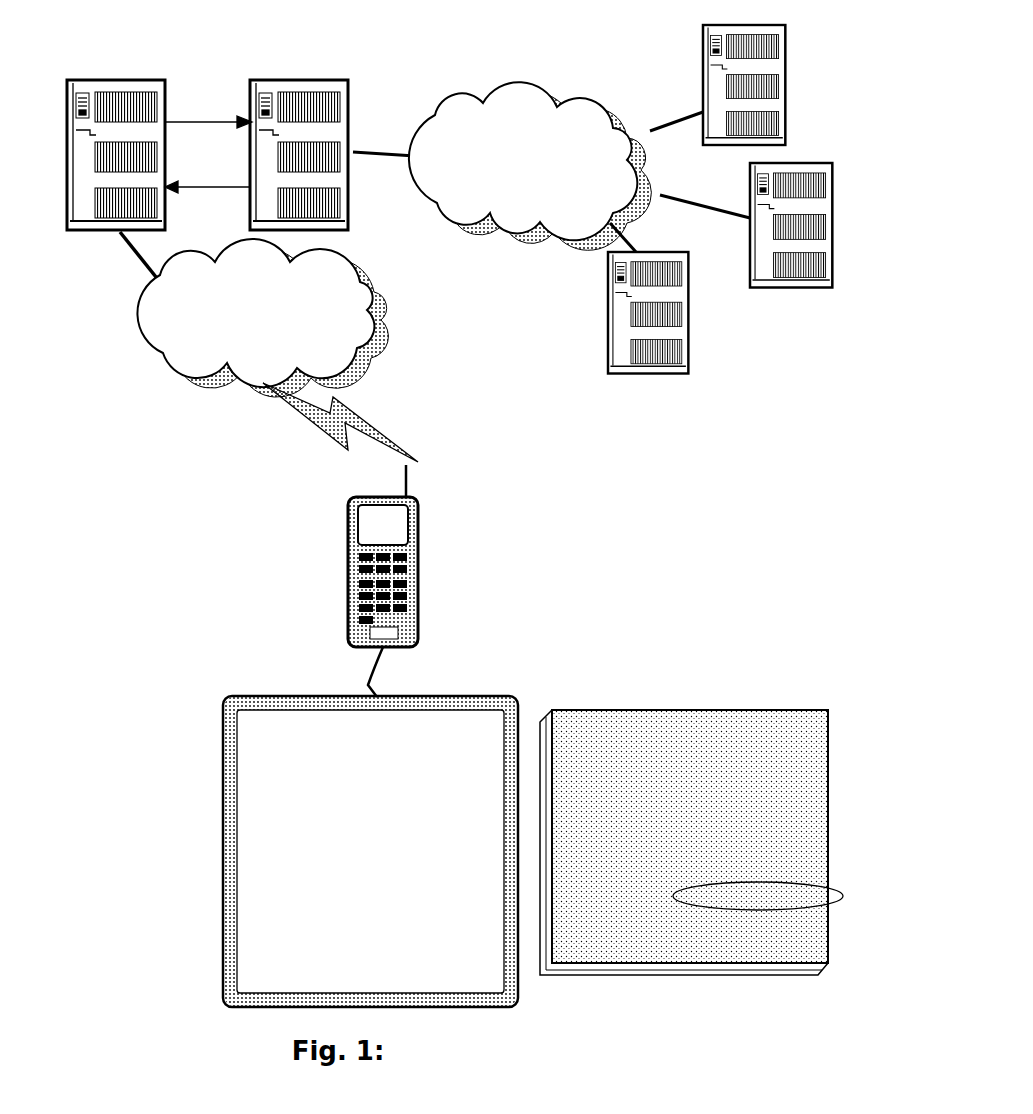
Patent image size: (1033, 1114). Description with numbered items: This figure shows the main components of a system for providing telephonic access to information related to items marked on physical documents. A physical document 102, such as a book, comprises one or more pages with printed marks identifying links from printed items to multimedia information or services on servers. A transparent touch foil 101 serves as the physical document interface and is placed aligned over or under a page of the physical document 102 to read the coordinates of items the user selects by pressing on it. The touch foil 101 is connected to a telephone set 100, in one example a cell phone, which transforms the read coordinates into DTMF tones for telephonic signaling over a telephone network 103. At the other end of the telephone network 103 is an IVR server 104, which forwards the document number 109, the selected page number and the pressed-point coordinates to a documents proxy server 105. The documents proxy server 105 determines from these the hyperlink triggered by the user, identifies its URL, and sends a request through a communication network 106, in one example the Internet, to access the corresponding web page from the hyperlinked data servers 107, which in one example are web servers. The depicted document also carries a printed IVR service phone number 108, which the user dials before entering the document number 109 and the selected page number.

The telephone set 100 is at (413, 550).
The touch foil 101 is at (223, 707).
The physical document 102 is at (724, 802).
The telephone network 103 is at (269, 347).
The IVR server 104 is at (132, 88).
The documents proxy server 105 is at (337, 88).
The communication network 106 is at (551, 167).
The hyperlinked data servers 107 is at (732, 199).
The printed IVR service phone number 108 is at (803, 887).
The document number 109 is at (787, 928).